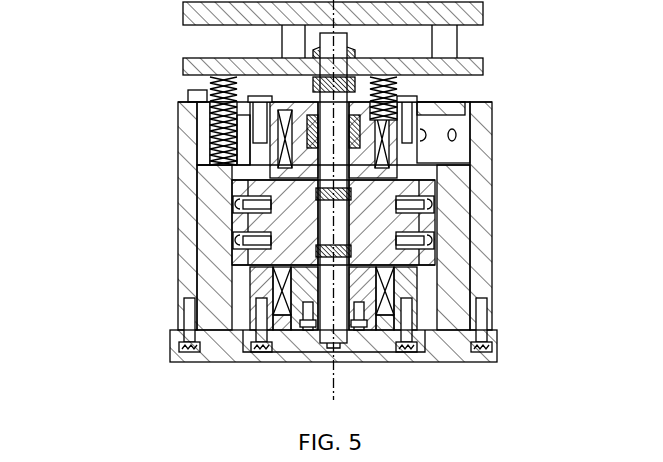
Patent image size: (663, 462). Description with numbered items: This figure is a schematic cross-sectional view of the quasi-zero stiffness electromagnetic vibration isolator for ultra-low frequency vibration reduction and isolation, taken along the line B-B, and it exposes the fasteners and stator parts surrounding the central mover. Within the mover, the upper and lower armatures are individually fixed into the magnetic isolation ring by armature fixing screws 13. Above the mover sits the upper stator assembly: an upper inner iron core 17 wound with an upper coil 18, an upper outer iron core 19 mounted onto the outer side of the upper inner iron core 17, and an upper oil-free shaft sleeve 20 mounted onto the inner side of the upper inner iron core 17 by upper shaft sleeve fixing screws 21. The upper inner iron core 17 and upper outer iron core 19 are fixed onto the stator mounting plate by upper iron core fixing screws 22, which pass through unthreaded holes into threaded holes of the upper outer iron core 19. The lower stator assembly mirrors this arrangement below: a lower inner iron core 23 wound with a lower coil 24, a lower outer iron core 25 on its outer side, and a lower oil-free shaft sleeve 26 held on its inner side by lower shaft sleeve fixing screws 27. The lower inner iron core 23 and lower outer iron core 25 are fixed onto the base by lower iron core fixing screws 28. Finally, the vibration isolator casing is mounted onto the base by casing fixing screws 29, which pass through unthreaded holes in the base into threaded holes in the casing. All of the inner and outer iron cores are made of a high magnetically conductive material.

The armature fixing screws 13 is at (245, 287).
The upper inner iron core 17 is at (262, 233).
The upper coil 18 is at (280, 198).
The upper outer iron core 19 is at (290, 168).
The upper oil-free shaft sleeve 20 is at (280, 146).
The upper shaft sleeve fixing screws 21 is at (262, 129).
The upper iron core fixing screws 22 is at (228, 118).
The lower inner iron core 23 is at (395, 250).
The lower coil 24 is at (400, 262).
The lower outer iron core 25 is at (405, 270).
The lower oil-free shaft sleeve 26 is at (415, 280).
The lower shaft sleeve fixing screws 27 is at (425, 290).
The lower iron core fixing screws 28 is at (478, 303).
The casing fixing screws 29 is at (498, 336).